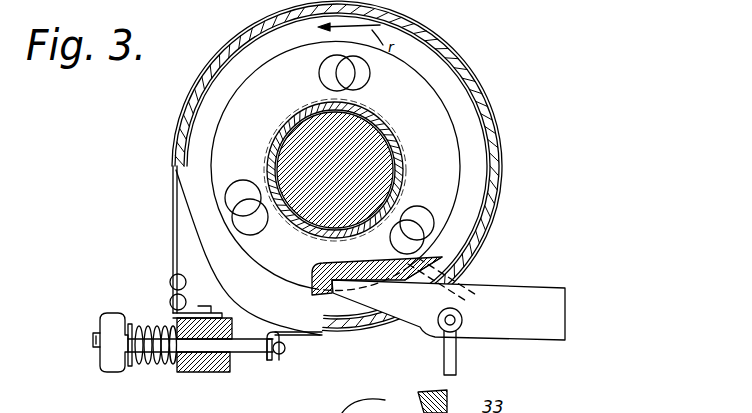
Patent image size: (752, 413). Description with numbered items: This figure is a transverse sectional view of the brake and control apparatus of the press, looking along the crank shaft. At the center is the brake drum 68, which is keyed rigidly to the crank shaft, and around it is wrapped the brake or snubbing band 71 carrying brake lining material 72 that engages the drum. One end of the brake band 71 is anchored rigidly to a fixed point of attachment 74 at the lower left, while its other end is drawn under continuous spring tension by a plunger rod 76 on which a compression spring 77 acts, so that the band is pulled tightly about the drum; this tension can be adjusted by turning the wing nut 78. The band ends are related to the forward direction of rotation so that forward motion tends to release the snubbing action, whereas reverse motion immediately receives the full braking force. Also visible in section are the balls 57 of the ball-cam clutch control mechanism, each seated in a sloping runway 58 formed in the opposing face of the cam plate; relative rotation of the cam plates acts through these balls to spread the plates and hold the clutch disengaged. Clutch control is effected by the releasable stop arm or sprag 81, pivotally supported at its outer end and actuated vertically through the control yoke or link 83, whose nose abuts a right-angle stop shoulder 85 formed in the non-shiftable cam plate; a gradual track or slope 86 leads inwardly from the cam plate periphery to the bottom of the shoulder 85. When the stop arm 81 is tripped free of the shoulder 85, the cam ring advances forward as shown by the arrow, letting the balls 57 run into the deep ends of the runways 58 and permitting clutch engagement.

The brake band 71 is at (255, 33).
The brake lining material 72 is at (448, 60).
The brake drum 68 is at (195, 132).
The balls 57 is at (320, 78).
The runways 58 is at (370, 82).
The fixed point of attachment 74 is at (171, 292).
The plunger rod 76 is at (248, 350).
The compression spring 77 is at (151, 358).
The wing nut 78 is at (104, 316).
The releasable stop arm 81 is at (522, 294).
The control yoke 83 is at (453, 362).
The stop shoulder 85 is at (336, 293).
The track or slope 86 is at (418, 274).